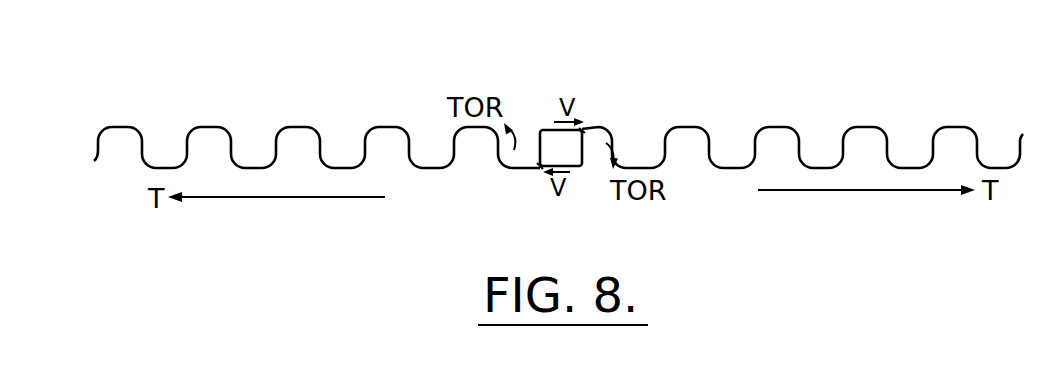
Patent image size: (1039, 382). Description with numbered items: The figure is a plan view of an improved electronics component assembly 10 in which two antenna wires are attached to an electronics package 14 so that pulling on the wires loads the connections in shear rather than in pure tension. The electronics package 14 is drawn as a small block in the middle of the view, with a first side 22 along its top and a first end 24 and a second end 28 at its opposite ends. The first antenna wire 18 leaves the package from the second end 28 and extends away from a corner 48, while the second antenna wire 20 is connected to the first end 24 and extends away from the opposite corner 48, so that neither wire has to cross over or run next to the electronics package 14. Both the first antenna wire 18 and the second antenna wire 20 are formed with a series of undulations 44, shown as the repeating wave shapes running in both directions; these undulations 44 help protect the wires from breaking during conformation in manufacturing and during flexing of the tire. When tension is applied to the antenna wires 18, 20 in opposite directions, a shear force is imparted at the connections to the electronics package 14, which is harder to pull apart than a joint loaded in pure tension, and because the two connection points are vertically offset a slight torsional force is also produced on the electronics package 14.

The electronics component assembly 10 is at (356, 54).
The electronics package 14 is at (570, 156).
The first antenna wire 18 is at (208, 125).
The second antenna wire 20 is at (956, 124).
The first side 22 is at (557, 130).
The first end 24 is at (582, 166).
The second end 28 is at (539, 133).
The undulations 44 is at (882, 100).
The corner 48 is at (583, 130).